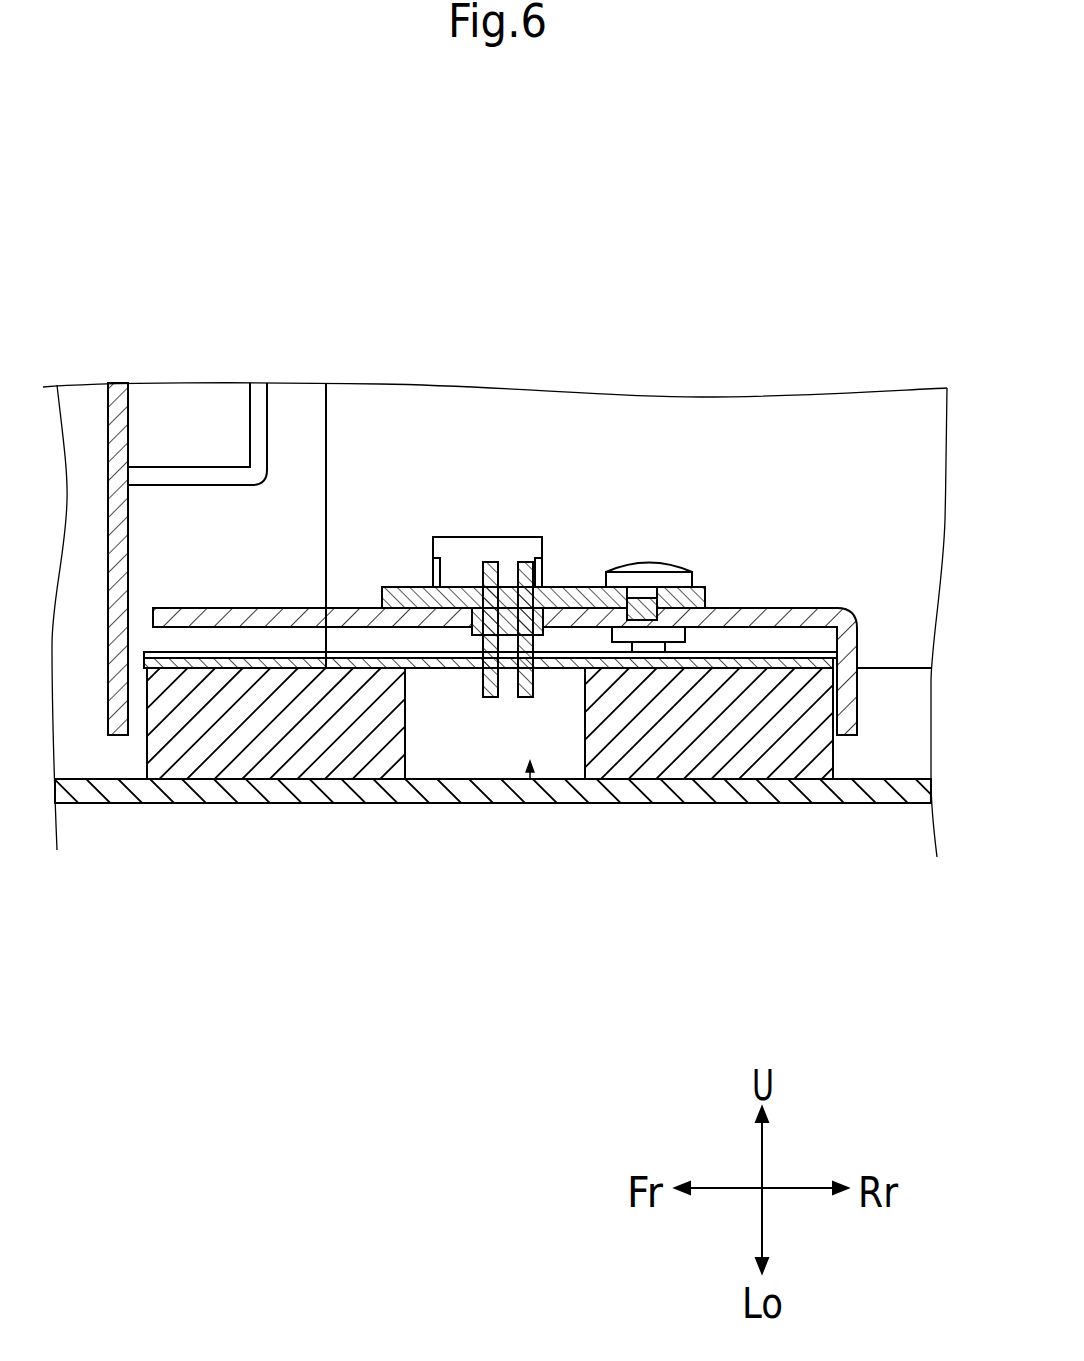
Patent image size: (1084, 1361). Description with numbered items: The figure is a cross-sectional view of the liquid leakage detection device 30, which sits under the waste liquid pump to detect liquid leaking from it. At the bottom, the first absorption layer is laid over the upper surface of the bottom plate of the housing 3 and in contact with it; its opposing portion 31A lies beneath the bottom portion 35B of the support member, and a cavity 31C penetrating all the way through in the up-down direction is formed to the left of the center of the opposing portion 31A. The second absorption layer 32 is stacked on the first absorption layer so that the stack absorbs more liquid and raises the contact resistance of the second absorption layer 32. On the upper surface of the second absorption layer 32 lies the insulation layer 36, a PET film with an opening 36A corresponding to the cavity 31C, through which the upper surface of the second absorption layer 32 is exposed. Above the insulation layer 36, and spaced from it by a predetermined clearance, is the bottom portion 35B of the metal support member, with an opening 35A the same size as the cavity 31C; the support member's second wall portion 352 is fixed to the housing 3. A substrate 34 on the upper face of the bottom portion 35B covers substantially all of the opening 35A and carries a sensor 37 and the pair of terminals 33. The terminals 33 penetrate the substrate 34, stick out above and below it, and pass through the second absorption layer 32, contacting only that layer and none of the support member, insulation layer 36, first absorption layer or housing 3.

The housing 3 is at (205, 803).
The liquid leakage detection device 30 is at (656, 957).
The opposing portion 31A is at (268, 783).
The cavity 31C is at (530, 778).
The second absorption layer 32 is at (852, 660).
The pair of terminals 33 is at (525, 697).
The substrate 34 is at (565, 587).
The opening 35A is at (563, 627).
The bottom portion 35B is at (350, 608).
The insulation layer 36 is at (851, 630).
The opening 36A is at (423, 668).
The sensor 37 is at (493, 537).
The second wall portion 352 is at (115, 740).